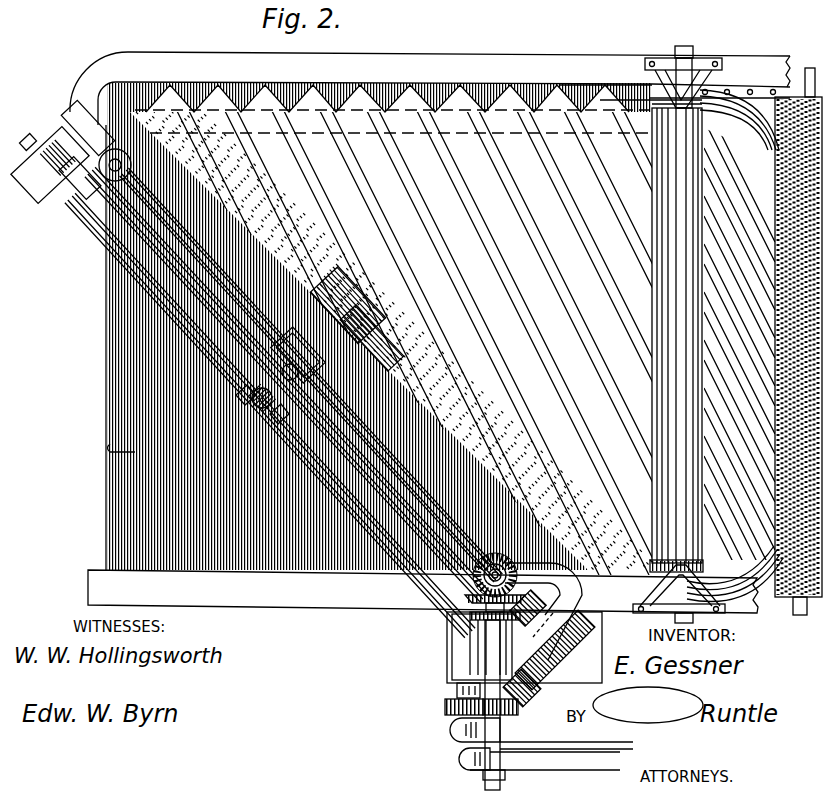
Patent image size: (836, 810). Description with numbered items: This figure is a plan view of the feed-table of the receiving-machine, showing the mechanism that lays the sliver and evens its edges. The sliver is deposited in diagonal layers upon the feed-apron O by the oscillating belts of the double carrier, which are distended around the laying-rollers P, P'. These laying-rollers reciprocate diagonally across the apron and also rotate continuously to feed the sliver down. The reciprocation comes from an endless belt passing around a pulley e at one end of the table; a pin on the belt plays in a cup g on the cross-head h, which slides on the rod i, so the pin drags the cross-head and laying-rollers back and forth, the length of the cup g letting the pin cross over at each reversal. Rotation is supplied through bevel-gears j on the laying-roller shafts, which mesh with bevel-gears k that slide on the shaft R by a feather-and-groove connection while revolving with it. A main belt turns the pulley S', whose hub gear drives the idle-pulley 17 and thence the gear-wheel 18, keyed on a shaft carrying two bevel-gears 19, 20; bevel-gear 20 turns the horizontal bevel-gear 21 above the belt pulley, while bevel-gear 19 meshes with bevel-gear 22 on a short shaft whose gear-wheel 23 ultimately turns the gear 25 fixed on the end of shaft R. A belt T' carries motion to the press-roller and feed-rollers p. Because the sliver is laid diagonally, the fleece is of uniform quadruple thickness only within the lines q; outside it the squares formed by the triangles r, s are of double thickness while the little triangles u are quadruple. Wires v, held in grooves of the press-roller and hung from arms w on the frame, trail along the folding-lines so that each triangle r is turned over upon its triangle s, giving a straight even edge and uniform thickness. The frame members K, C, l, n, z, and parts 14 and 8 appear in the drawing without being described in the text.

The feed-apron O is at (380, 347).
The triangle of double thickness r is at (486, 330).
The triangle of double thickness s is at (388, 119).
The little triangles u is at (400, 123).
The line of uniform thickness q is at (648, 120).
The upper guide l is at (626, 108).
The bottom bar K is at (423, 591).
The roller C is at (676, 336).
The light rods or stiff wires v is at (739, 120).
The fabric turn lower z is at (735, 574).
The arms w is at (739, 373).
The feed-rollers p is at (822, 82).
The shaft R is at (97, 220).
The rod i is at (366, 428).
The middle rod n is at (287, 384).
The lower rod 14 is at (458, 632).
The cup g is at (298, 355).
The bevel-gears k is at (340, 374).
The cross-head h is at (241, 399).
The bevel-gears j is at (266, 387).
The laying-roller P is at (347, 305).
The laying-roller P' is at (372, 338).
The horizontal bevel-gear 21 is at (518, 577).
The pulley e is at (478, 586).
The bevel-gear 20 is at (490, 607).
The bevel-gear 19 is at (481, 705).
The bevel-gear 22 is at (543, 611).
The gear-wheel 23 is at (555, 650).
The gear-wheel 25 is at (540, 697).
The idle-pulley 17 is at (445, 708).
The gear-wheel 18 is at (518, 710).
The pulley S' is at (525, 733).
The belt T' is at (529, 763).
The support 8 is at (610, 716).